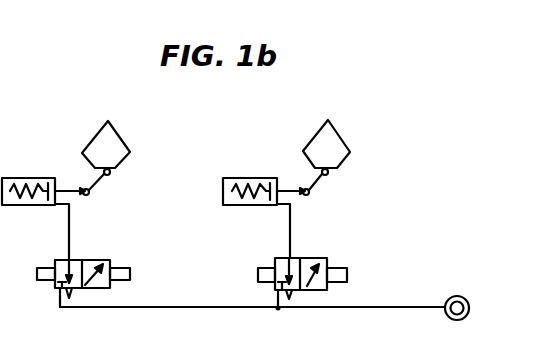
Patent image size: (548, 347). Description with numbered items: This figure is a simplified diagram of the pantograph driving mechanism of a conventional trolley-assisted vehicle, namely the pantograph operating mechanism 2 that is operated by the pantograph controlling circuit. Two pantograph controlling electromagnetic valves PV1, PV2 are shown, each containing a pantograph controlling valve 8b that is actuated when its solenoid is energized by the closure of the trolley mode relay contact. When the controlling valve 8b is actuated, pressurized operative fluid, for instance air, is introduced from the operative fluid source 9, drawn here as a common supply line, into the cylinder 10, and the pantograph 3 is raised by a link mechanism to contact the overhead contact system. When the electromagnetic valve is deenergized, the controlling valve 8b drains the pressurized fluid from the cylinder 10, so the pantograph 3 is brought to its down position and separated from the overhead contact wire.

The pantograph operating mechanism 2 is at (234, 163).
The pantograph 3 is at (127, 140).
The pantograph controlling valve 8b is at (192, 263).
The operative fluid source 9 is at (456, 295).
The cylinder 10 is at (41, 208).
The pantograph controlling electromagnetic valve PV1 is at (83, 265).
The pantograph controlling electromagnetic valve PV2 is at (256, 240).